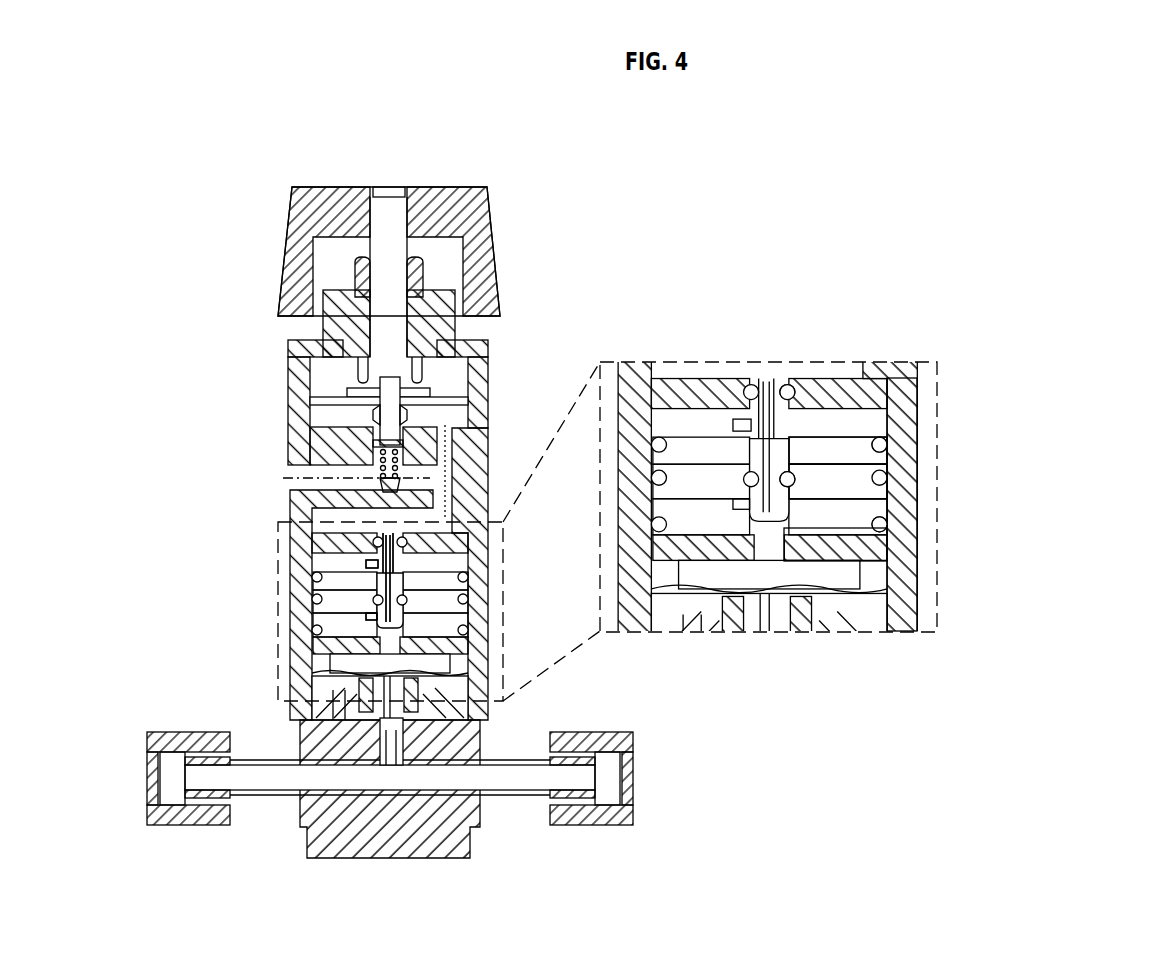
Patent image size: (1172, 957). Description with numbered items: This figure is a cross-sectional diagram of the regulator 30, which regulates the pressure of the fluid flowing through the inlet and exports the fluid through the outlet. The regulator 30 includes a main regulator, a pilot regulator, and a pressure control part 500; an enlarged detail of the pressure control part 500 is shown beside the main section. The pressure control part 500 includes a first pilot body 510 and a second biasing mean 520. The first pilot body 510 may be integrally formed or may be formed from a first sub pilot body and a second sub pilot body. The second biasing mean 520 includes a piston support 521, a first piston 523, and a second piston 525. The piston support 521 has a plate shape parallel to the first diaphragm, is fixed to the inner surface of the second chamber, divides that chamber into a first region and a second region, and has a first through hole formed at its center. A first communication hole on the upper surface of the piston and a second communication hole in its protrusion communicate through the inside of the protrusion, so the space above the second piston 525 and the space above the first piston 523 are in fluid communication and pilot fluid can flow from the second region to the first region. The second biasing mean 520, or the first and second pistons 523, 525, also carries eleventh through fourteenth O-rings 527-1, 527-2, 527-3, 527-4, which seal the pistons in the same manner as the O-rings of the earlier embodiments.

The regulator 30 is at (521, 179).
The pressure control part 500 is at (1102, 292).
The first pilot body 510 is at (917, 371).
The second biasing mean 520 is at (1035, 360).
The piston support 521 is at (852, 486).
The first piston 523 is at (848, 451).
The second piston 525 is at (855, 531).
The eleventh O-ring 527-1 is at (887, 526).
The twelfth O-ring 527-2 is at (887, 444).
The thirteenth O-ring 527-3 is at (795, 481).
The fourteenth O-ring 527-4 is at (795, 393).